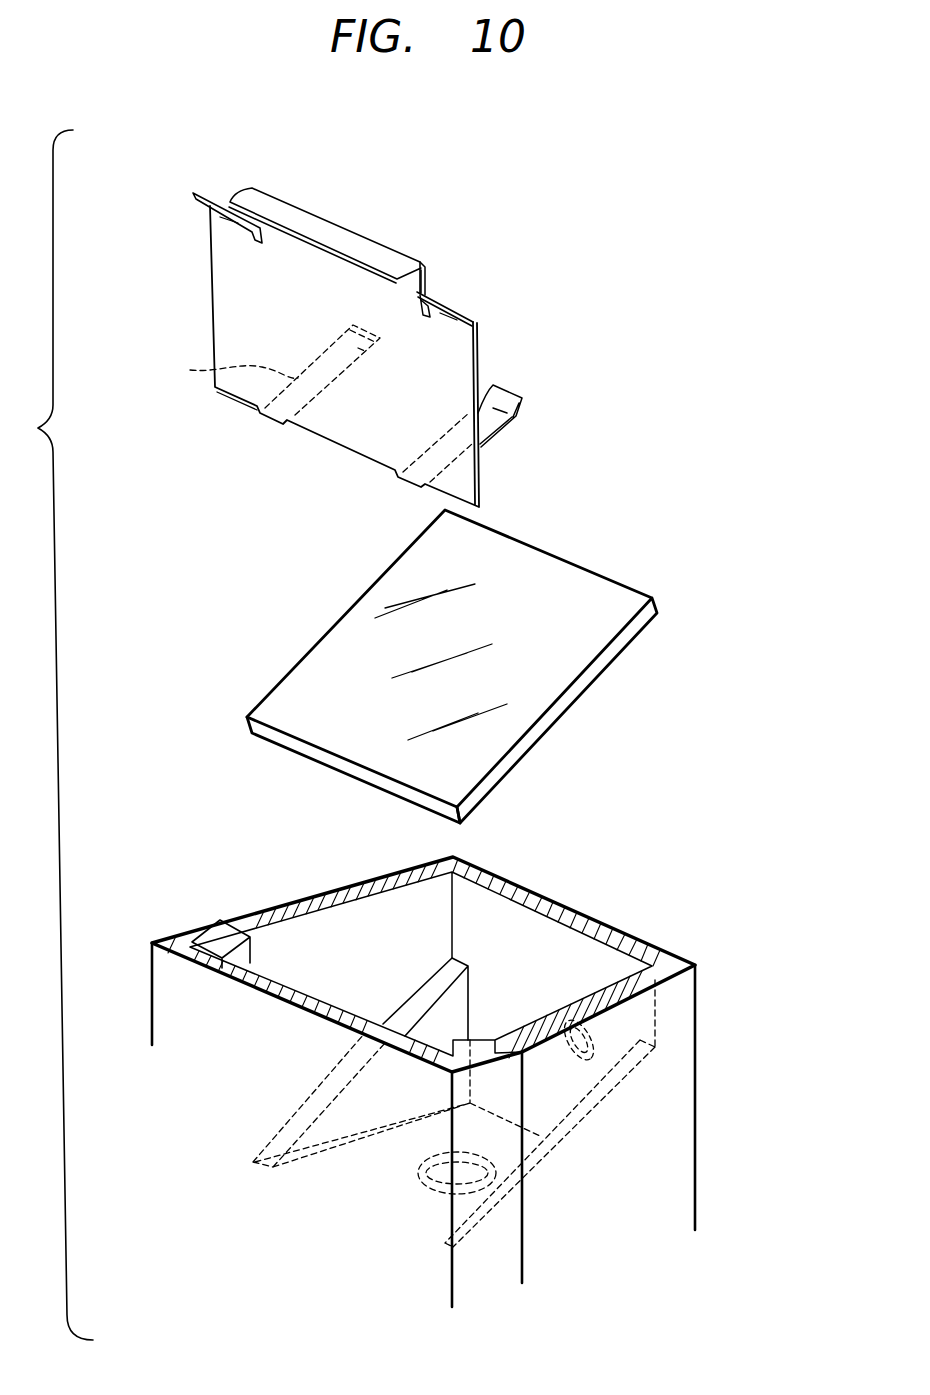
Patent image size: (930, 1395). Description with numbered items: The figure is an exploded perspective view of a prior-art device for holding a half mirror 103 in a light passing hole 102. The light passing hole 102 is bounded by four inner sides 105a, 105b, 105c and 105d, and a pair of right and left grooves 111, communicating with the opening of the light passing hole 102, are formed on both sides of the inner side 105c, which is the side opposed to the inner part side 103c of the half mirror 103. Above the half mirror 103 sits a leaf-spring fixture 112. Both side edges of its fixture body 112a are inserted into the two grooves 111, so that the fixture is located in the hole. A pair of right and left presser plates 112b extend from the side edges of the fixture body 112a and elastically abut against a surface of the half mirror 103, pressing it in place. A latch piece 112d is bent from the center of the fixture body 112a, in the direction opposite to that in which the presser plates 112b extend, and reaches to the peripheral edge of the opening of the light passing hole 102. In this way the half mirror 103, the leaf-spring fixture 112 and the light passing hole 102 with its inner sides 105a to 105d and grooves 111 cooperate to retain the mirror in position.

The light passing hole 102 is at (545, 930).
The half mirror 103 is at (580, 553).
The inner part side of half mirror 103c is at (363, 773).
The inner side of light passing hole 105a is at (327, 940).
The inner side of light passing hole 105b is at (558, 996).
The inner side of light passing hole 105c is at (265, 992).
The inner side of light passing hole 105d is at (583, 957).
The groove 111 is at (212, 942).
The leaf-spring fixture 112 is at (430, 243).
The fixture body 112a is at (265, 282).
The presser plate 112b is at (575, 431).
The latch piece 112d is at (327, 228).